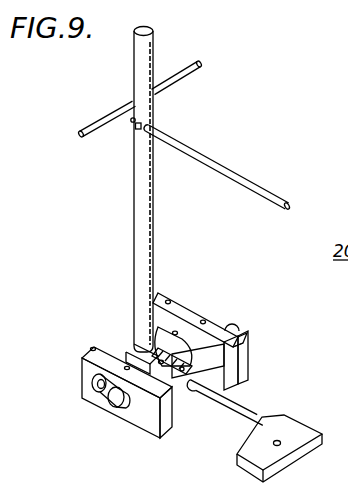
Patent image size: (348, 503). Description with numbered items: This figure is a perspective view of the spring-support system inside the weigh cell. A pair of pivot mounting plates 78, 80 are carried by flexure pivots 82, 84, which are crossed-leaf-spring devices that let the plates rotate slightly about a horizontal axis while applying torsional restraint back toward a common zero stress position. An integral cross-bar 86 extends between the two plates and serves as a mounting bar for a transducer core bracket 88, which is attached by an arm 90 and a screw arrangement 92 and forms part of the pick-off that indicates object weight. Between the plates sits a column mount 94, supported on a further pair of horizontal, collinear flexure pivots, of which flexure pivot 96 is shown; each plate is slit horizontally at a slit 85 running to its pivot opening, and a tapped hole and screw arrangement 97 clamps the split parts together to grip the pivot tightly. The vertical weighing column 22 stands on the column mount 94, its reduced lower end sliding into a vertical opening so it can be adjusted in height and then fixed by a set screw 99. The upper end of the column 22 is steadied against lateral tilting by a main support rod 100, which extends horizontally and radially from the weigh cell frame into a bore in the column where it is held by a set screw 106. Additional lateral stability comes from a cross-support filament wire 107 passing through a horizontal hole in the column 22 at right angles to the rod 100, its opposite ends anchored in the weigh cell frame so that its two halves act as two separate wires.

The vertical weighing column 22 is at (138, 206).
The pivot mounting plate 78 is at (242, 366).
The pivot mounting plate 80 is at (153, 428).
The flexure pivot 82 is at (239, 328).
The flexure pivot 84 is at (121, 405).
The slit 85 is at (169, 327).
The cross-bar 86 is at (243, 341).
The transducer core bracket 88 is at (299, 438).
The arm 90 is at (246, 410).
The screw arrangement 92 is at (183, 371).
The column mount 94 is at (130, 355).
The flexure pivot 96 is at (95, 393).
The tapped hole and screw arrangement 97 is at (91, 347).
The set screw 99 is at (197, 314).
The main support rod 100 is at (236, 172).
The set screw 106 is at (132, 136).
The cross-support filament wire 107 is at (199, 63).